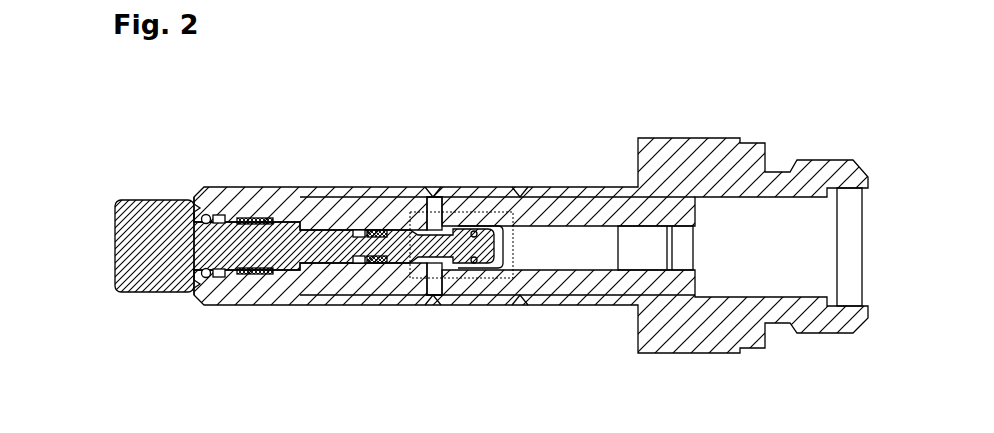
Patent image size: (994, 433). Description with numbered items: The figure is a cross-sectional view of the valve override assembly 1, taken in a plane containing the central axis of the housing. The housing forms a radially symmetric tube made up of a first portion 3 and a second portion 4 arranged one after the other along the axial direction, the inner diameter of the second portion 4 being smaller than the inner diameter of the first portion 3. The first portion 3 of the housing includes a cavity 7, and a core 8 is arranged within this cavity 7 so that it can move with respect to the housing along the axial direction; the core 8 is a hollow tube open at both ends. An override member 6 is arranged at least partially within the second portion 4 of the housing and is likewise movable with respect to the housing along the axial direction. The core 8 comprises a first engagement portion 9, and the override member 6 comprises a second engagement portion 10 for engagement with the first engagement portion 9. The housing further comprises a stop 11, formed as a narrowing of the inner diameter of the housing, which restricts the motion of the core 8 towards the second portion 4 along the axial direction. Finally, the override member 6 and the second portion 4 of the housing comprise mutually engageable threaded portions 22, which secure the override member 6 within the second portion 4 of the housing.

The valve override assembly 1 is at (203, 114).
The first portion 3 is at (608, 302).
The second portion 4 is at (206, 290).
The override member 6 is at (122, 248).
The cavity 7 is at (725, 245).
The core 8 is at (567, 282).
The first engagement portion 9 is at (458, 266).
The second engagement portion 10 is at (492, 243).
The stop 11 is at (427, 284).
The threaded portions 22 is at (262, 210).